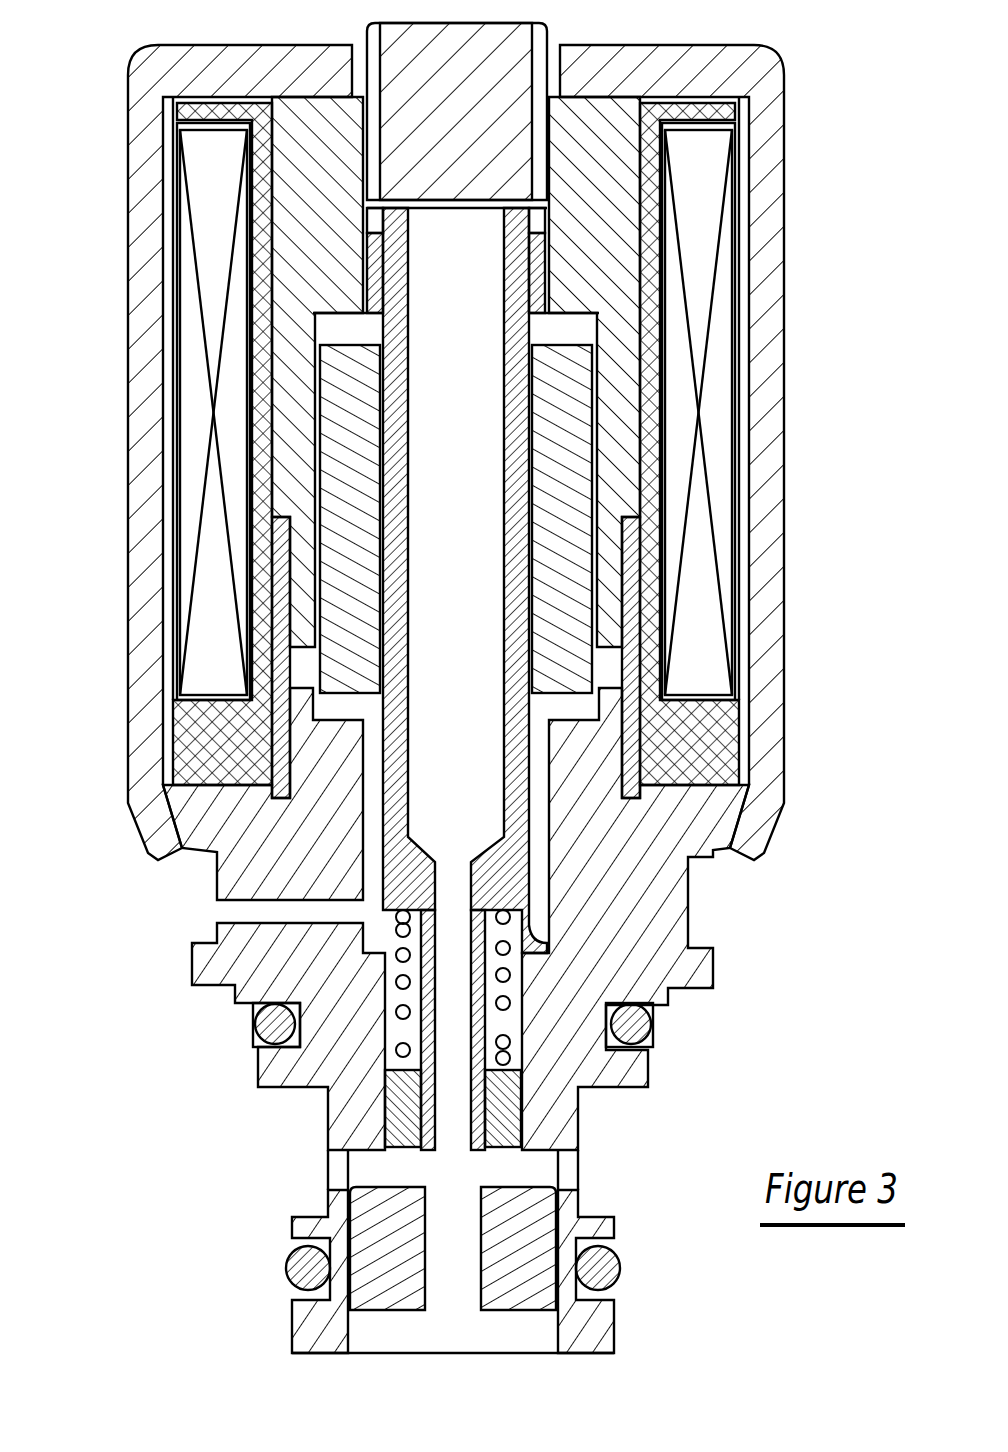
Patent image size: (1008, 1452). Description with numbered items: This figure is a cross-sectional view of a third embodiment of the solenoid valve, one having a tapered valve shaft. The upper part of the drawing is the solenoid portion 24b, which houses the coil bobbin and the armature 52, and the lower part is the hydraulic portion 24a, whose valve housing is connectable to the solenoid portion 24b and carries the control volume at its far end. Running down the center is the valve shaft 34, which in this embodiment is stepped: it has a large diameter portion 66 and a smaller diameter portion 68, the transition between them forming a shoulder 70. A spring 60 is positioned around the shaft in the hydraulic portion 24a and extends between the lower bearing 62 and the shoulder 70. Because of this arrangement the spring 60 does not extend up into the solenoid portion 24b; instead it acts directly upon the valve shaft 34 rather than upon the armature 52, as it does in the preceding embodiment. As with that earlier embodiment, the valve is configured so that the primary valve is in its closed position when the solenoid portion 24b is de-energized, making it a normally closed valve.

The hydraulic portion 24a is at (90, 925).
The solenoid portion 24b is at (90, 12).
The valve shaft 34 is at (510, 817).
The armature 52 is at (550, 618).
The spring 60 is at (408, 1012).
The lower bearing 62 is at (503, 1110).
The large diameter portion 66 is at (510, 888).
The smaller diameter portion 68 is at (487, 985).
The shoulder 70 is at (543, 933).